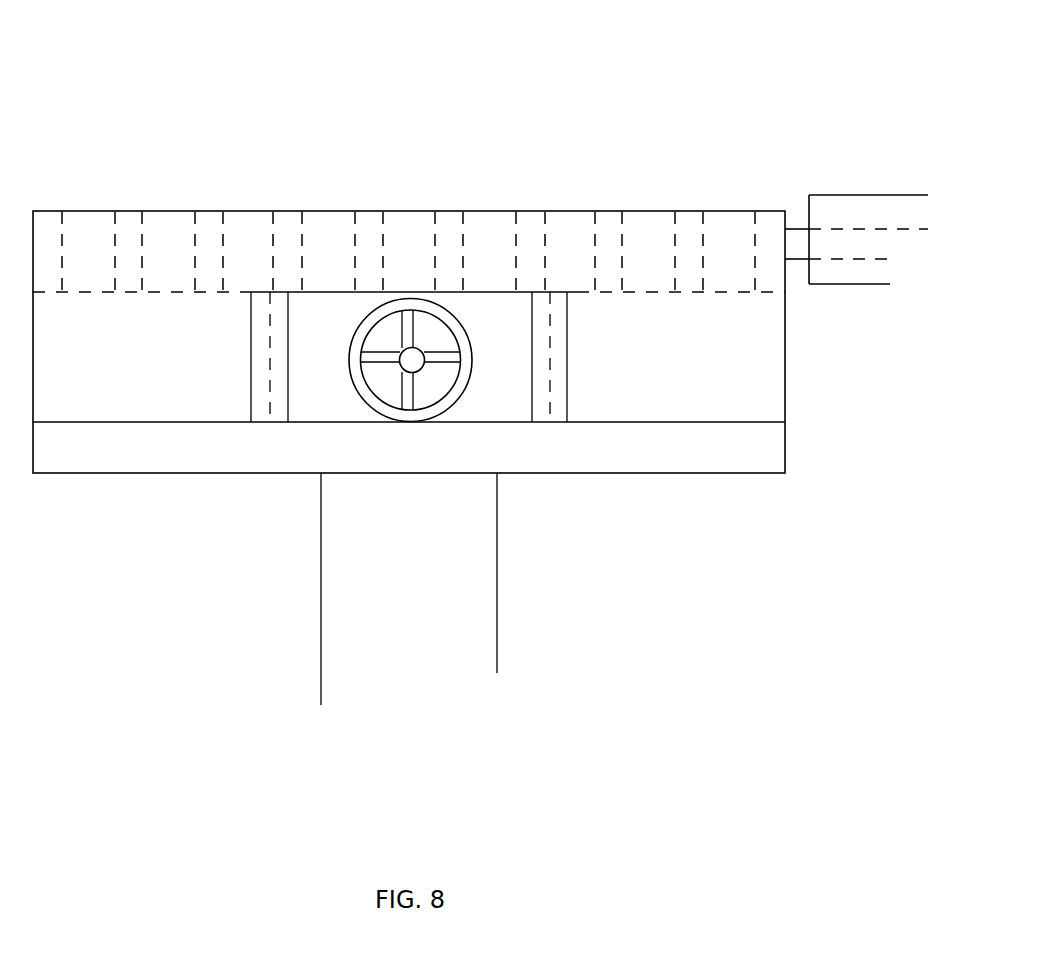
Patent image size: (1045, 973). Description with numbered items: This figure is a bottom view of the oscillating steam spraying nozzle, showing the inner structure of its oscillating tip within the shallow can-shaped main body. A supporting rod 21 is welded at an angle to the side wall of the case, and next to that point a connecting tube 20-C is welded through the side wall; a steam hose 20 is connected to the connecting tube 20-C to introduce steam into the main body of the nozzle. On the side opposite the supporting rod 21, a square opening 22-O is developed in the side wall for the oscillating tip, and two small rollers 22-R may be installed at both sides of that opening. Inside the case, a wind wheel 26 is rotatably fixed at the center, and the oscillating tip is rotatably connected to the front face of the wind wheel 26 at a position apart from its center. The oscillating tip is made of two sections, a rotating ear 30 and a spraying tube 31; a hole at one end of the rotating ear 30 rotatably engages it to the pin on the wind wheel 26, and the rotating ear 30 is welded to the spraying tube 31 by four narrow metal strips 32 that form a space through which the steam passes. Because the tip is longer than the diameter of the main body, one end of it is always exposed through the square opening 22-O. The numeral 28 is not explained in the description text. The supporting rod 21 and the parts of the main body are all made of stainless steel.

The steam hose 20 is at (883, 219).
The connecting tube 20-C is at (799, 228).
The supporting rod 21 is at (365, 608).
The square opening 22-O is at (333, 342).
The small rollers 22-R is at (550, 340).
The wind wheel 26 is at (242, 211).
The slats / fins 28 is at (126, 224).
The rotating ear 30 is at (411, 358).
The spraying tube 31 is at (357, 380).
The narrow metal strips 32 is at (440, 365).